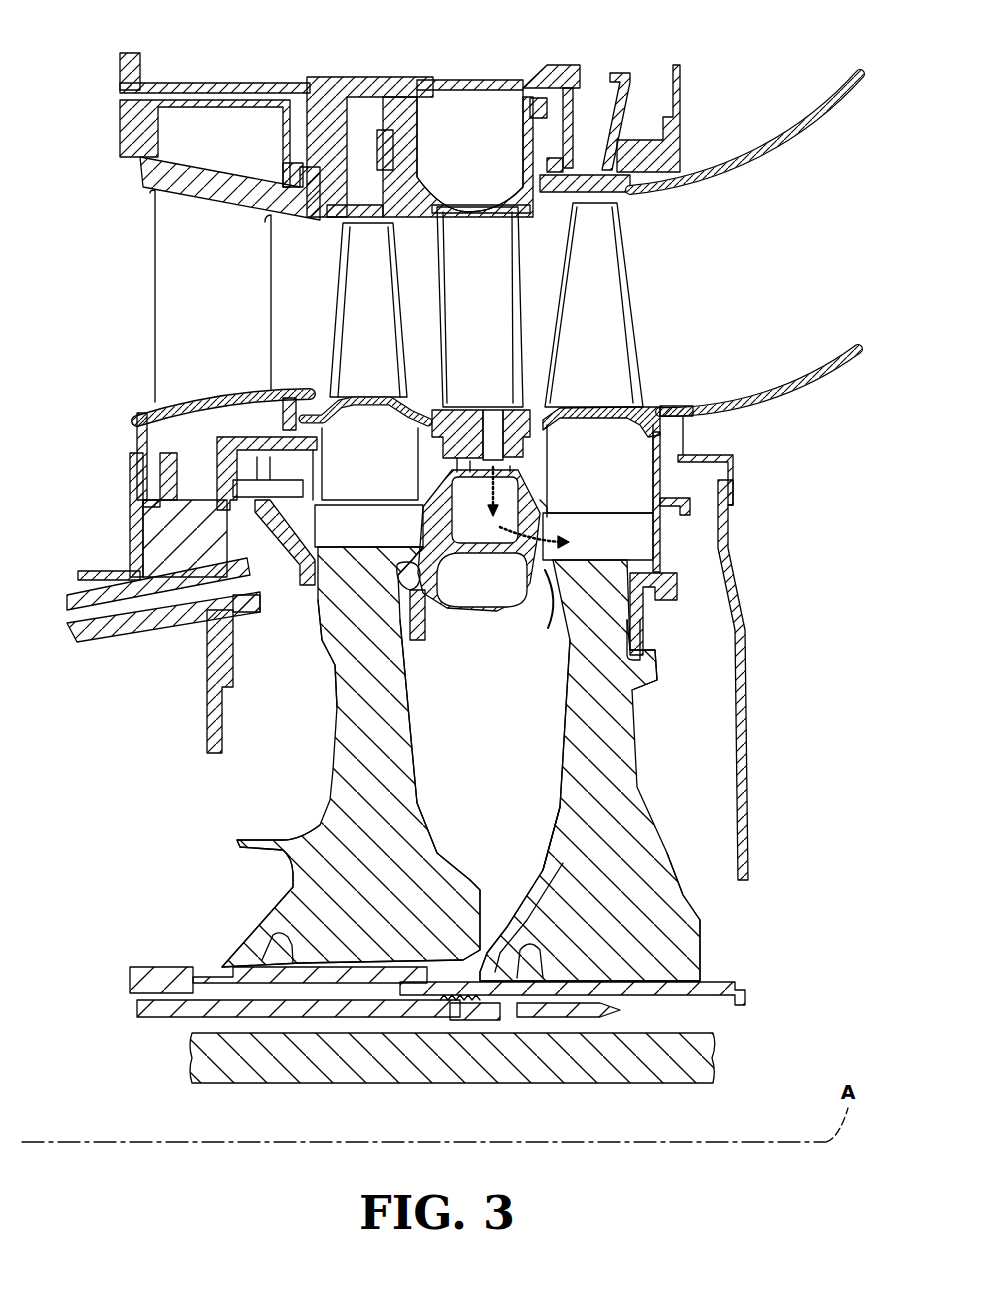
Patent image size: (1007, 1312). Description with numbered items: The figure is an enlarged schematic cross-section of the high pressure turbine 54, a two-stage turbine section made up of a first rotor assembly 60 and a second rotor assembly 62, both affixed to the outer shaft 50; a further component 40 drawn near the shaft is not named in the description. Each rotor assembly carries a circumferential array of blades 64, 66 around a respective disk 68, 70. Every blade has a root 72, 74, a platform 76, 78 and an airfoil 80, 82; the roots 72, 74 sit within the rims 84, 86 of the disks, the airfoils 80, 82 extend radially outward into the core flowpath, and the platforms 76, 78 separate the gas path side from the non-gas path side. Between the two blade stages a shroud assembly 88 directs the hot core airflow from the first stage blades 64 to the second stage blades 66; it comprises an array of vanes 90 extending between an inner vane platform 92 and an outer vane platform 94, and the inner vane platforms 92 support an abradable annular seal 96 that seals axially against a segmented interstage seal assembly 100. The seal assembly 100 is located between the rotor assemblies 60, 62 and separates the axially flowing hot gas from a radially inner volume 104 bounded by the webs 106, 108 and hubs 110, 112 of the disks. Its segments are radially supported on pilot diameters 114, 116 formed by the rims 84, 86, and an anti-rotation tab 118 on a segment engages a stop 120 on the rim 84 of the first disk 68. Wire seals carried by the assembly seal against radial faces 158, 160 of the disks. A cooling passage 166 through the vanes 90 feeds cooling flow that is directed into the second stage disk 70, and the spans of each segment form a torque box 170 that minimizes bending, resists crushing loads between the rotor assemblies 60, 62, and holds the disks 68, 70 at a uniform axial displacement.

The shaft 40 is at (713, 1067).
The outer shaft 50 is at (717, 985).
The high pressure turbine 54 is at (750, 562).
The first rotor assembly 60 is at (351, 757).
The second rotor assembly 62 is at (602, 770).
The first stage blades 64 is at (332, 322).
The second stage blades 66 is at (631, 320).
The first disk 68 is at (322, 655).
The second disk 70 is at (633, 717).
The first blade root 72 is at (359, 447).
The second blade root 74 is at (590, 489).
The first blade platform 76 is at (385, 395).
The second blade platform 78 is at (617, 400).
The first blade airfoil 80 is at (356, 319).
The second blade airfoil 82 is at (586, 299).
The first disk rim 84 is at (353, 153).
The second disk rim 86 is at (583, 167).
The shroud assembly 88 is at (473, 110).
The vanes 90 is at (493, 332).
The inner vane platform 92 is at (513, 407).
The outer vane platform 94 is at (487, 207).
The abradable annular seal 96 is at (530, 460).
The segmented interstage seal assembly 100 is at (518, 581).
The radially inner volume 104 is at (471, 796).
The first disk web 106 is at (360, 731).
The second disk web 108 is at (577, 742).
The first disk hub 110 is at (355, 909).
The second disk hub 112 is at (592, 919).
The first pilot diameter 114 is at (410, 550).
The second pilot diameter 116 is at (547, 580).
The anti-rotation tab 118 is at (427, 620).
The stop 120 is at (425, 640).
The first disk radial face 158 is at (407, 547).
The second disk radial face 160 is at (520, 620).
The cooling passage 166 is at (493, 420).
The torque box 170 is at (466, 588).